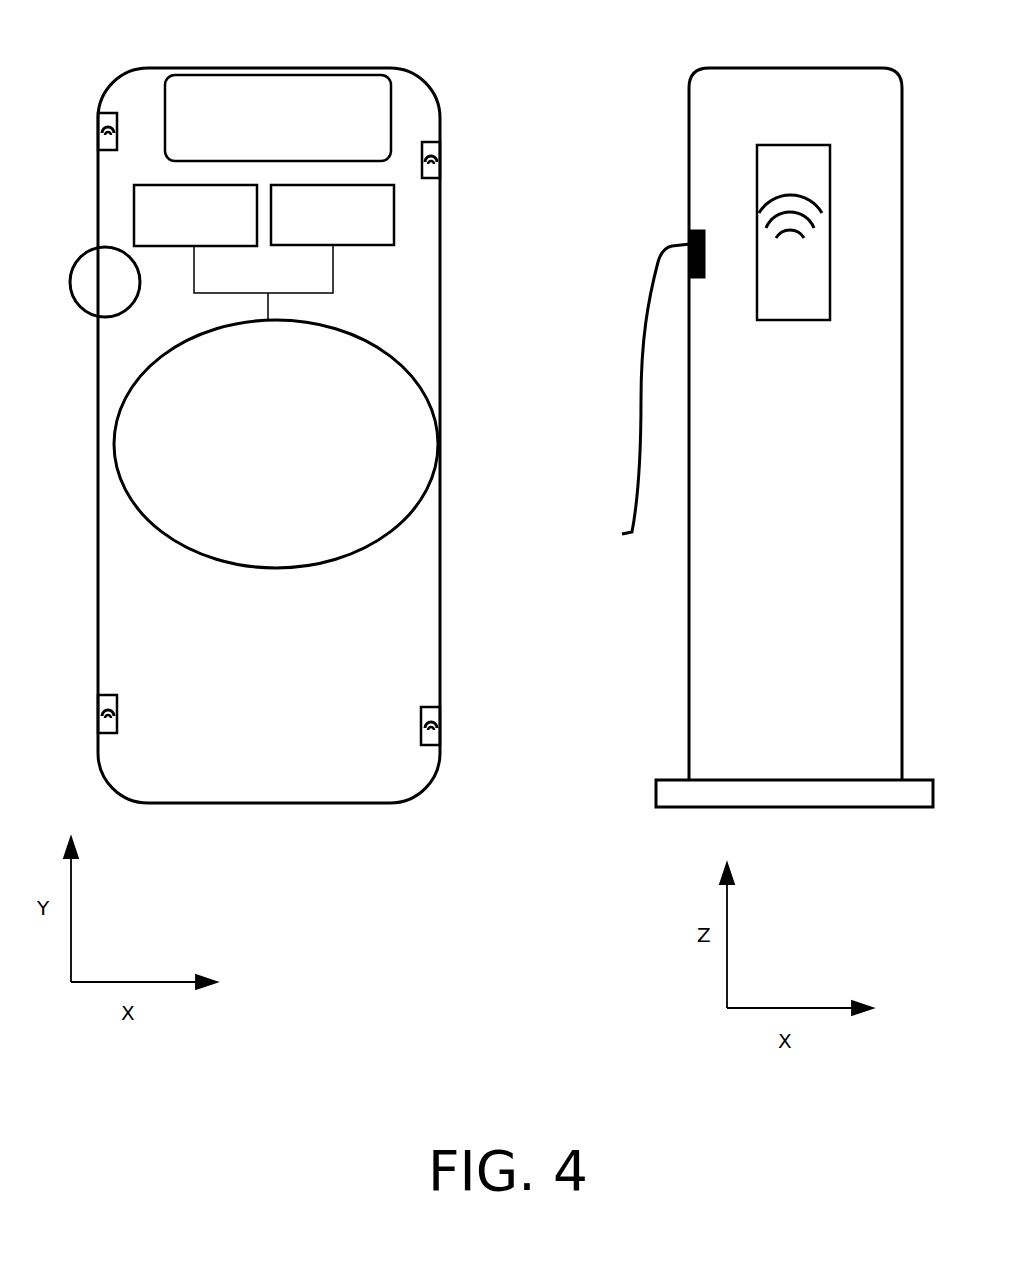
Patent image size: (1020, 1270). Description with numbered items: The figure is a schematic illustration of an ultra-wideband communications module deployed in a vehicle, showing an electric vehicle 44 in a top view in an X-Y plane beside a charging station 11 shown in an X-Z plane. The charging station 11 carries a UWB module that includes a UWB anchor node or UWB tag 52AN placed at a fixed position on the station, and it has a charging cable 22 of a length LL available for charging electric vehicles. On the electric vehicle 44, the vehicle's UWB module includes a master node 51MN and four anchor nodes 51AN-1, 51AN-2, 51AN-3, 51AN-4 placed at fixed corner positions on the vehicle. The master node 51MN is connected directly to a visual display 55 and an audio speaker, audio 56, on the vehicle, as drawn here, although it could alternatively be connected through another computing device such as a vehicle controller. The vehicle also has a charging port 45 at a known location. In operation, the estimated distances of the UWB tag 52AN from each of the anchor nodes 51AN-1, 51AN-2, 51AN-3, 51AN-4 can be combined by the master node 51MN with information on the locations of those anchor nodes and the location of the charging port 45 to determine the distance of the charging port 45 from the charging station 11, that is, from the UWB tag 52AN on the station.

The charging station 11 is at (800, 67).
The charging cable 22 is at (649, 366).
The length of charging cable LL is at (656, 389).
The electric vehicle 44 is at (248, 70).
The charging port 45 is at (92, 256).
The anchor node 51AN-1 is at (103, 113).
The anchor node 51AN-2 is at (432, 142).
The anchor node 51AN-3 is at (106, 700).
The anchor node 51AN-4 is at (432, 712).
The master node 51MN is at (276, 444).
The UWB tag 52AN is at (785, 145).
The display 55 is at (195, 215).
The audio 56 is at (332, 215).